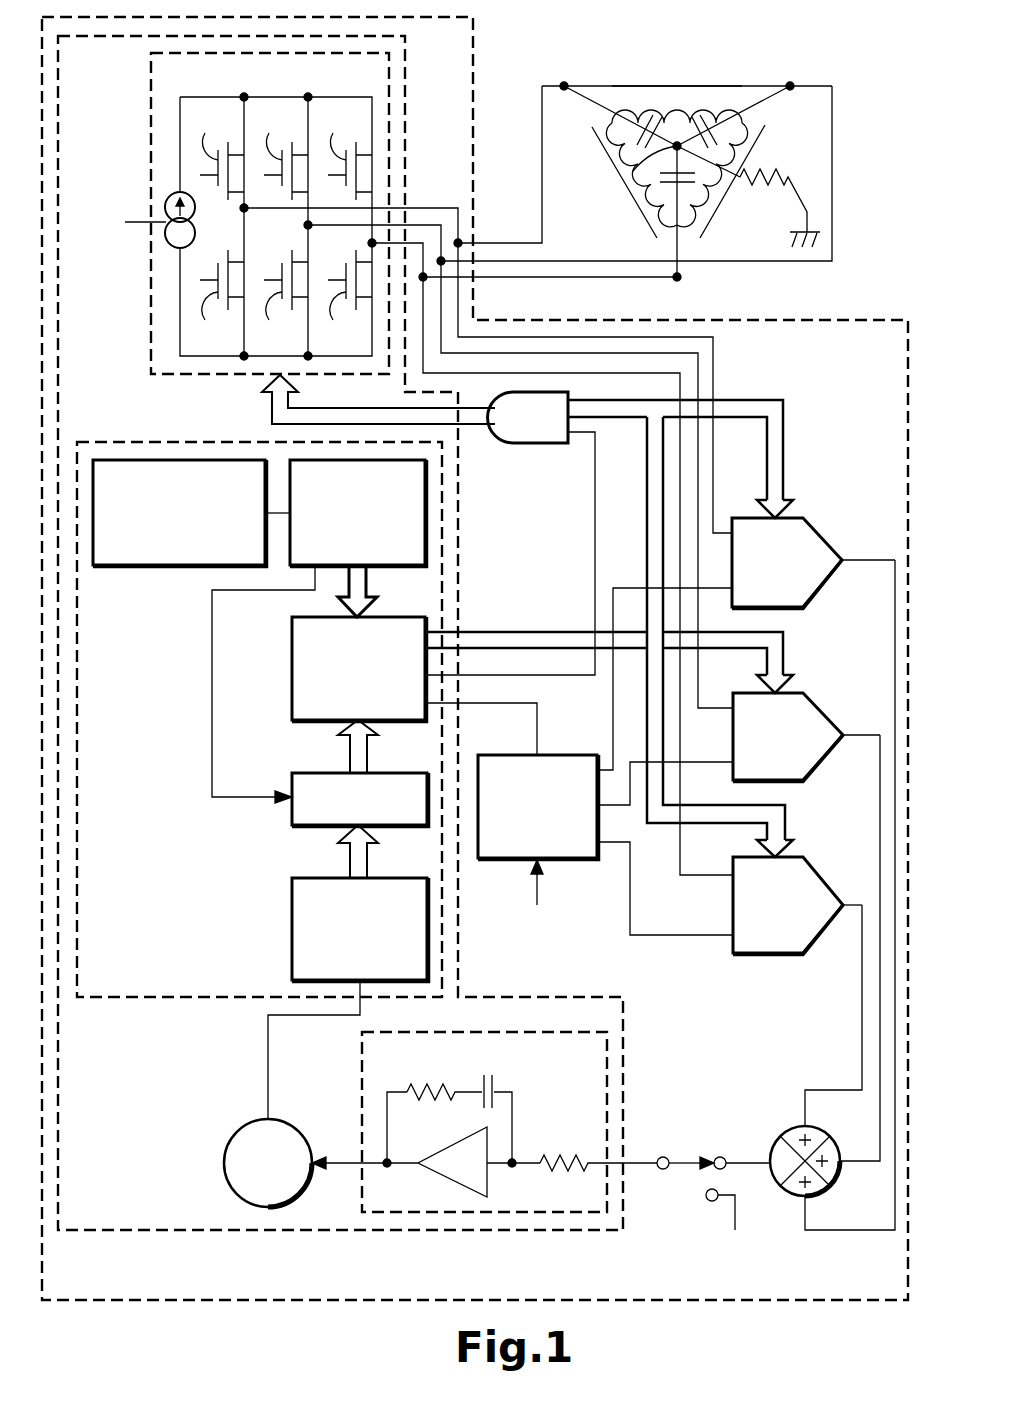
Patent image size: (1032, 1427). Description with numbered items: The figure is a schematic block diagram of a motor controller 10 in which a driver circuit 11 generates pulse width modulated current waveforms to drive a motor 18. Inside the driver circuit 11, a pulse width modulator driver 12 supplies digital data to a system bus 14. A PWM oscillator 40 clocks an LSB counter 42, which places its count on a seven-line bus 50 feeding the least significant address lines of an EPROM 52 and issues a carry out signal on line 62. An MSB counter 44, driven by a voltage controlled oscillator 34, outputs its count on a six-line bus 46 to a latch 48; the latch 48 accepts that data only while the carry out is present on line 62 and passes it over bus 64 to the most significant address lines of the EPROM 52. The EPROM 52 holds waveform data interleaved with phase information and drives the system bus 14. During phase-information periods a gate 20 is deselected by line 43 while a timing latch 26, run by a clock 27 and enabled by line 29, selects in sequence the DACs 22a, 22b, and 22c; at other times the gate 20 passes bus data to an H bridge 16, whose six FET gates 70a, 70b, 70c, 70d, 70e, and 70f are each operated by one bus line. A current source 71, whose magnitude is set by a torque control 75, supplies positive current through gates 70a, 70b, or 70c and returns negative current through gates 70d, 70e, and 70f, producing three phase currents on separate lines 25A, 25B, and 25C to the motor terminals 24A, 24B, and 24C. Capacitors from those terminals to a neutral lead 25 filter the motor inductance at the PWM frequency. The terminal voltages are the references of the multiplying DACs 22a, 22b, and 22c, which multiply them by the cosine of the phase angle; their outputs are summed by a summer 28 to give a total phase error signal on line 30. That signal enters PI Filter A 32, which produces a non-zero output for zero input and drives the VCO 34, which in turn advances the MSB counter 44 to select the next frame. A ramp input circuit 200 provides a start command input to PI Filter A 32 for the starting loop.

The motor controller 10 is at (258, 1295).
The driver circuit 11 is at (245, 1230).
The pulse width modulator driver 12 is at (175, 997).
The system bus 14 is at (272, 416).
The H bridge 16 is at (150, 115).
The motor 18 is at (766, 161).
The gate 20 is at (548, 447).
The DAC 22a is at (830, 545).
The DAC 22b is at (830, 718).
The DAC 22c is at (822, 880).
The motor terminal 24A is at (563, 85).
The motor terminal 24B is at (790, 85).
The motor terminal 24C is at (680, 278).
The neutral lead 25 is at (633, 175).
The line 25A is at (508, 240).
The line 25B is at (585, 258).
The line 25C is at (535, 280).
The timing latch 26 is at (560, 860).
The clock 27 is at (540, 935).
The summer 28 is at (825, 1185).
The line 29 is at (538, 730).
The line 30 is at (748, 1160).
The PI Filter A 32 is at (360, 1108).
The voltage controlled oscillator 34 is at (225, 1157).
The PWM oscillator 40 is at (120, 460).
The LSB counter 42 is at (427, 514).
The line 43 is at (595, 578).
The MSB counter 44 is at (292, 938).
The bus 46 is at (370, 850).
The latch 48 is at (307, 826).
The bus 50 is at (368, 585).
The EPROM 52 is at (292, 668).
The line 62 is at (212, 755).
The bus 64 is at (350, 752).
The gate 70a is at (218, 153).
The gate 70b is at (282, 153).
The gate 70c is at (346, 153).
The gate 70d is at (218, 302).
The gate 70e is at (282, 302).
The gate 70f is at (346, 302).
The current source 71 is at (197, 200).
The torque control 75 is at (86, 285).
The ramp input circuit 200 is at (676, 1250).